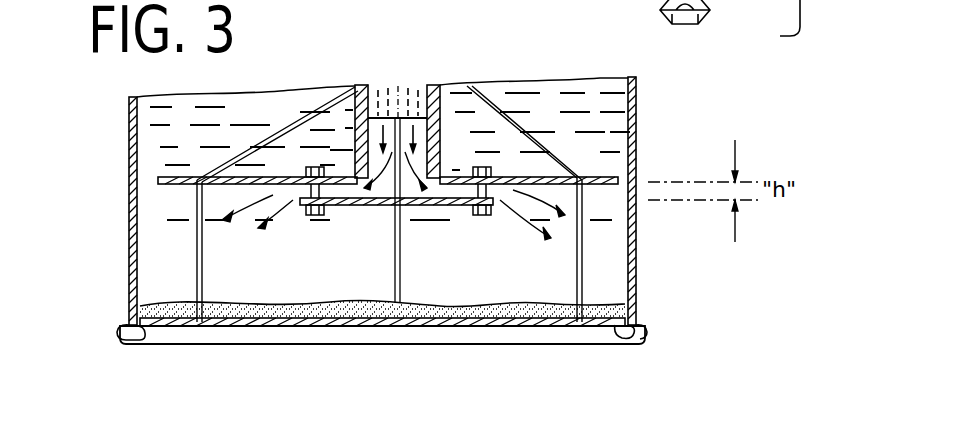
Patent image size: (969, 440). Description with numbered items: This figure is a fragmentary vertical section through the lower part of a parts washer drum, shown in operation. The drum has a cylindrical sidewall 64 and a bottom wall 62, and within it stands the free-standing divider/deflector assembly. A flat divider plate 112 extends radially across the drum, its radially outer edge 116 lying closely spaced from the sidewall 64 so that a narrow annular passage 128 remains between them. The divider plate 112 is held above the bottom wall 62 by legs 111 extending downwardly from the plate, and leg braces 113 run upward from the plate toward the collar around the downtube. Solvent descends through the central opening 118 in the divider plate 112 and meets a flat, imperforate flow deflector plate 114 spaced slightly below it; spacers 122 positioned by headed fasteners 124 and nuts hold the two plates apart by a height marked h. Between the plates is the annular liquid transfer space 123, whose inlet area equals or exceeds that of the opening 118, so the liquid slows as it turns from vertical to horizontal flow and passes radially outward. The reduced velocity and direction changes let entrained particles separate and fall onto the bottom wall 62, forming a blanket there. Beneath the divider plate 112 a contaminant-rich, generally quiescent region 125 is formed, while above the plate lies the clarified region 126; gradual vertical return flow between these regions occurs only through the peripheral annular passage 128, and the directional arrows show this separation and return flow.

The bottom wall 62 is at (497, 298).
The cylindrical sidewall 64 is at (133, 260).
The legs 111 is at (200, 290).
The divider plate 112 is at (632, 136).
The leg braces 113 is at (503, 114).
The flow deflector plate 114 is at (372, 192).
The radially outer edge 116 is at (614, 175).
The center passage opening 118 is at (425, 176).
The spacers 122 is at (477, 193).
The annular liquid transfer space 123 is at (410, 192).
The headed fasteners 124 is at (305, 170).
The contaminant-rich quiescent region 125 is at (310, 262).
The clarified region 126 is at (247, 115).
The annular passage 128 is at (147, 182).